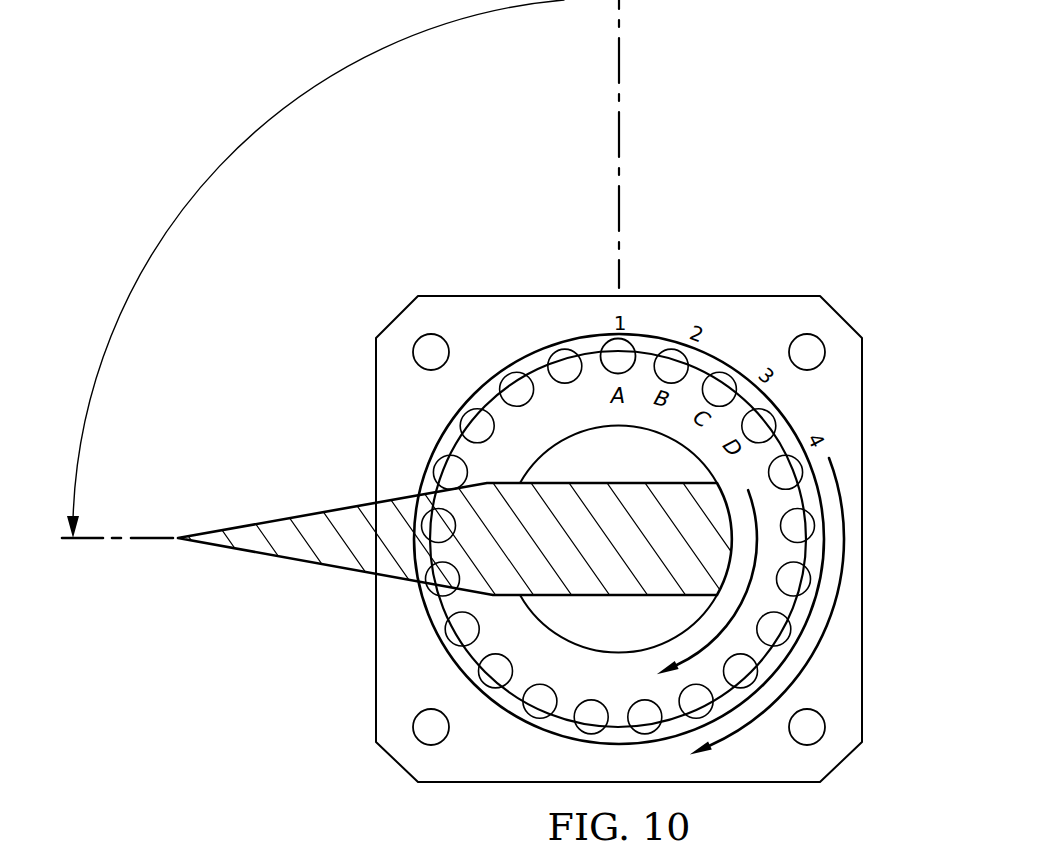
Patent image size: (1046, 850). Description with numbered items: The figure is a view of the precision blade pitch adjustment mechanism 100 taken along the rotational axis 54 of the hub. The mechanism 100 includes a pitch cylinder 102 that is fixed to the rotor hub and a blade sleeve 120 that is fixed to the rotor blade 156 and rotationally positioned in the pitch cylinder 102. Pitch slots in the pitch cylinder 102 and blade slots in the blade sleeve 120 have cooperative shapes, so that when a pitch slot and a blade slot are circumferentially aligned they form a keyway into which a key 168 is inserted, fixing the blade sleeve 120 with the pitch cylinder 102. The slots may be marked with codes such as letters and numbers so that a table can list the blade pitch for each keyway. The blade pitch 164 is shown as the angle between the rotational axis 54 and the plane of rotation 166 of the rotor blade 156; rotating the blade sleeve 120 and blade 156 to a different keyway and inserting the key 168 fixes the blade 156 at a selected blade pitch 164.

The rotational axis 54 is at (622, 63).
The precision blade pitch adjustment mechanism 100 is at (781, 153).
The pitch cylinder 102 is at (772, 422).
The blade sleeve 120 is at (783, 502).
The rotor blade 156 is at (318, 512).
The blade pitch 164 is at (233, 154).
The plane of rotation 166 is at (146, 538).
The key 168 is at (623, 352).